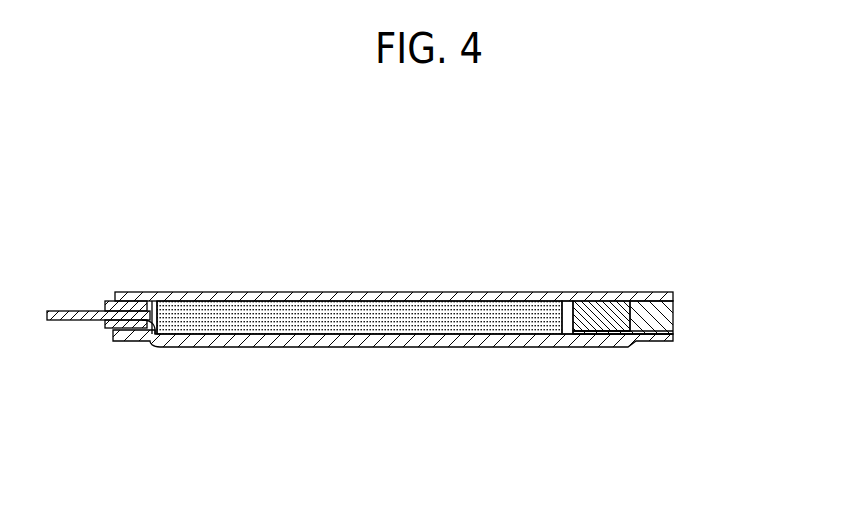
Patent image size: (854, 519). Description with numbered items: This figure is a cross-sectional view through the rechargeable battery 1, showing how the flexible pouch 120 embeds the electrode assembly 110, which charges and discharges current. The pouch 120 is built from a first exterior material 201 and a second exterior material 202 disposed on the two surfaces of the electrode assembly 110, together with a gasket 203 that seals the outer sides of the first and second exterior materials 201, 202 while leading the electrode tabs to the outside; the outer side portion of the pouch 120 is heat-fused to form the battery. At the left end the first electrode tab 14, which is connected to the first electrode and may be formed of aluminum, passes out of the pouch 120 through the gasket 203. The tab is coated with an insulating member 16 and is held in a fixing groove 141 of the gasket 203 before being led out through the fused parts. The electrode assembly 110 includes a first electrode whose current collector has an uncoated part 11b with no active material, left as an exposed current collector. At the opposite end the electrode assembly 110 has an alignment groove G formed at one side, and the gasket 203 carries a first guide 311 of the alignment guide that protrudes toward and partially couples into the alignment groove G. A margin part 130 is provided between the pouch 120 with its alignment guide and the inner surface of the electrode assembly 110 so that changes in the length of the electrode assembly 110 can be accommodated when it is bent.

The rechargeable battery 1 is at (395, 212).
The first electrode tab 14 is at (60, 320).
The insulating member 16 is at (103, 326).
The fixing groove 141 is at (140, 338).
The uncoated part 11b is at (178, 348).
The electrode assembly 110 is at (318, 322).
The alignment groove G is at (568, 330).
The first guide 311 is at (588, 320).
The margin part 130 is at (620, 336).
The first exterior material 201 is at (673, 337).
The second exterior material 202 is at (673, 295).
The gasket 203 is at (668, 313).
The pouch 120 is at (468, 316).